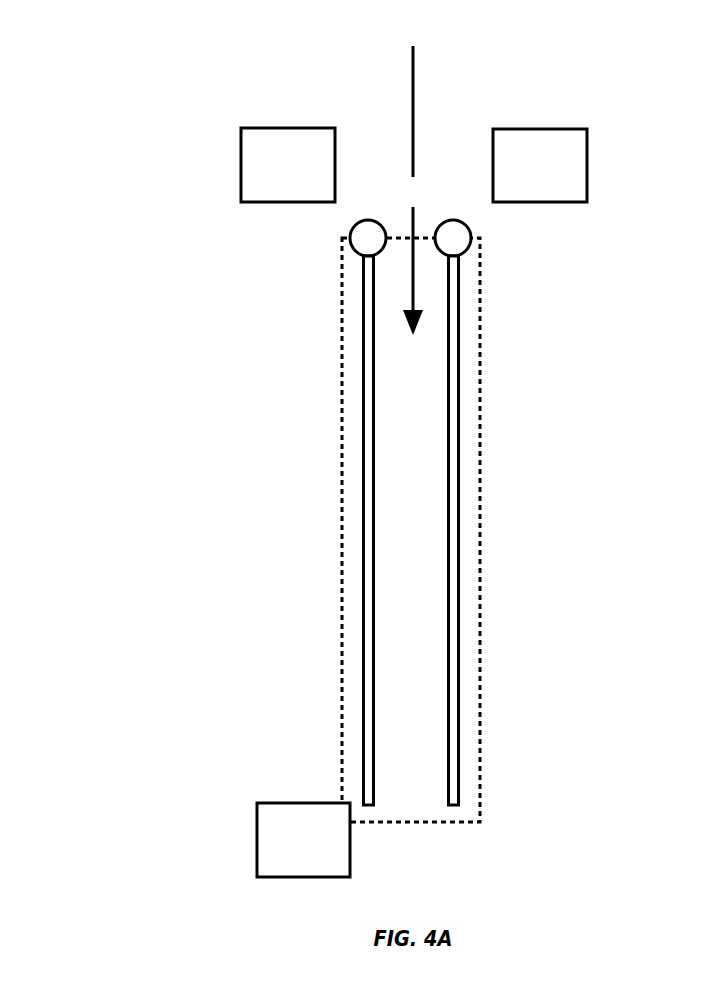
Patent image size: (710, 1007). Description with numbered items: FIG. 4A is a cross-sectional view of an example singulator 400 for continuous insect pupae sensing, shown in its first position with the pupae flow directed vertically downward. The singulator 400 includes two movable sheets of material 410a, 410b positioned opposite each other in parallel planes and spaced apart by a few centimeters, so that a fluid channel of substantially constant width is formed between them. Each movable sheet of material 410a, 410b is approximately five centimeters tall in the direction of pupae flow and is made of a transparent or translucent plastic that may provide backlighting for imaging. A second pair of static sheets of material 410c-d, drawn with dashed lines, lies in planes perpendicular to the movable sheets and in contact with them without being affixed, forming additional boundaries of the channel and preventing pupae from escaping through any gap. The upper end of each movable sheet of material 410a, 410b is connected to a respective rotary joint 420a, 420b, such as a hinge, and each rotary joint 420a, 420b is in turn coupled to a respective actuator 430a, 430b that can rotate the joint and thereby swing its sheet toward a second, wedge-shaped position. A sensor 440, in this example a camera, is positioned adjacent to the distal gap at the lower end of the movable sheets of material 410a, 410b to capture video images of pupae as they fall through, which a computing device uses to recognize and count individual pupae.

The singulator 400 is at (266, 84).
The movable sheet of material 410a is at (362, 688).
The movable sheet of material 410b is at (458, 692).
The static sheets of material 410c-d is at (480, 483).
The rotary joint 420a is at (313, 245).
The rotary joint 420b is at (500, 248).
The actuator 430a is at (288, 165).
The actuator 430b is at (540, 165).
The sensor 440 is at (303, 840).